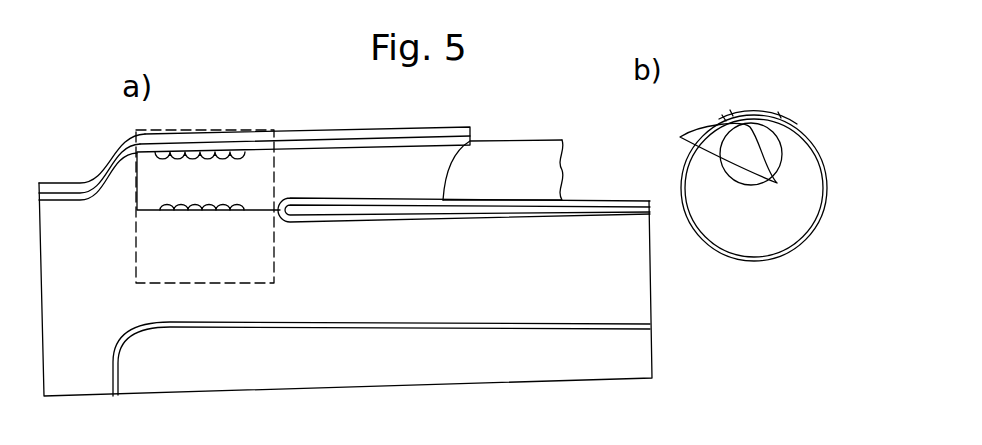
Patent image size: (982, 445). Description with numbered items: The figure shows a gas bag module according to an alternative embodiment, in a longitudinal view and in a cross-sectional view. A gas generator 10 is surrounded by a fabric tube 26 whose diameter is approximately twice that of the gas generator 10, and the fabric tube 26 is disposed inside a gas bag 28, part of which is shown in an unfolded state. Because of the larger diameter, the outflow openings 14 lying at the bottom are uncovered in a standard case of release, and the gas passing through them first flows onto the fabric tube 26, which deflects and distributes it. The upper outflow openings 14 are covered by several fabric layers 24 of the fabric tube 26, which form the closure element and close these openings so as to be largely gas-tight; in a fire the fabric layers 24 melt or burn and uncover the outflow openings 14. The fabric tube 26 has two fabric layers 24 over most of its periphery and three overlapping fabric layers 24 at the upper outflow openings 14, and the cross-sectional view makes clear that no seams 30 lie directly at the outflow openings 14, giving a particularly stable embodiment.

The gas generator 10 is at (516, 160).
The outflow openings 14 is at (203, 156).
The fabric layers 24 is at (781, 126).
The fabric tube 26 is at (136, 247).
The gas bag 28 is at (77, 377).
The seams 30 is at (774, 113).